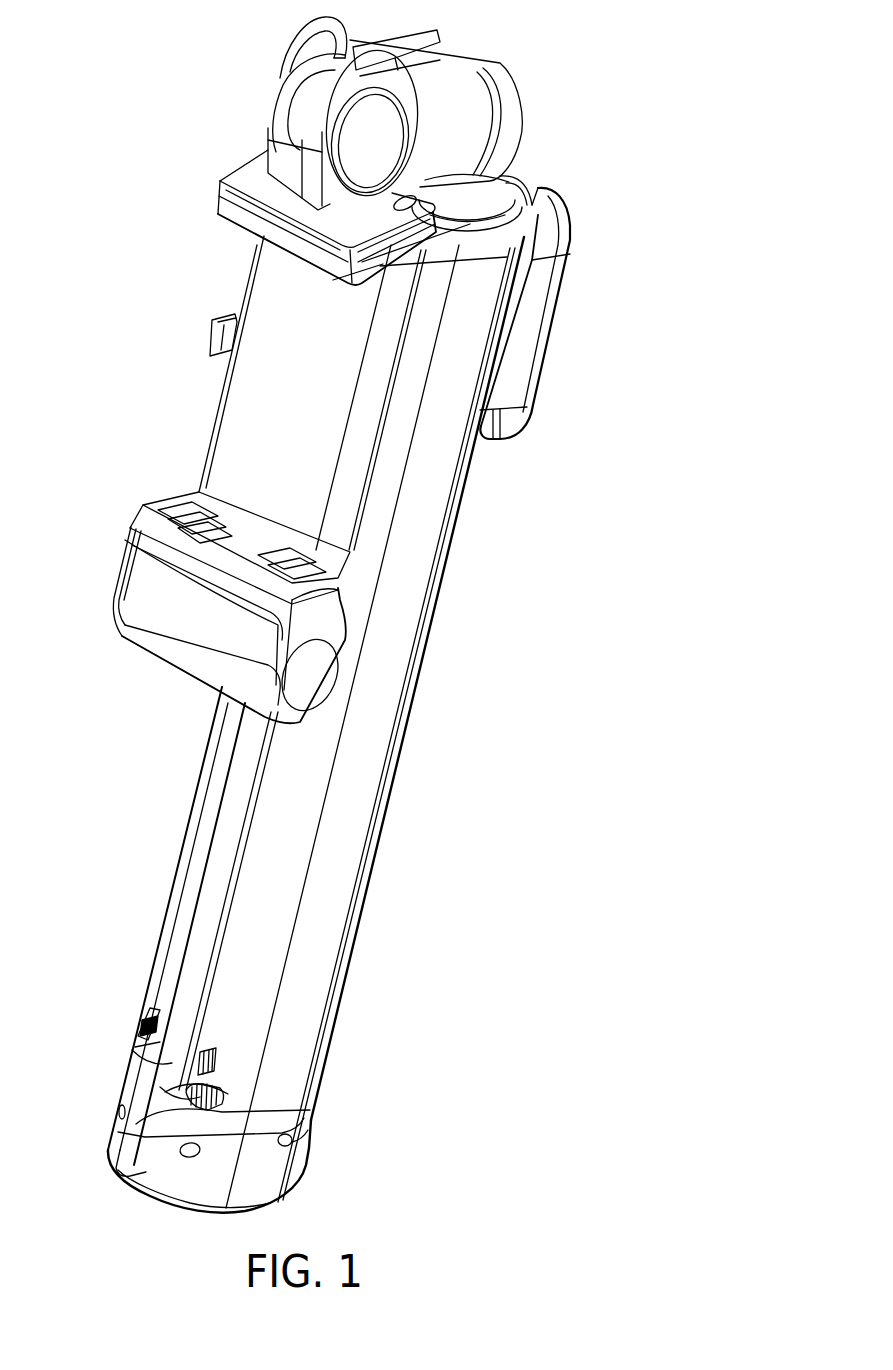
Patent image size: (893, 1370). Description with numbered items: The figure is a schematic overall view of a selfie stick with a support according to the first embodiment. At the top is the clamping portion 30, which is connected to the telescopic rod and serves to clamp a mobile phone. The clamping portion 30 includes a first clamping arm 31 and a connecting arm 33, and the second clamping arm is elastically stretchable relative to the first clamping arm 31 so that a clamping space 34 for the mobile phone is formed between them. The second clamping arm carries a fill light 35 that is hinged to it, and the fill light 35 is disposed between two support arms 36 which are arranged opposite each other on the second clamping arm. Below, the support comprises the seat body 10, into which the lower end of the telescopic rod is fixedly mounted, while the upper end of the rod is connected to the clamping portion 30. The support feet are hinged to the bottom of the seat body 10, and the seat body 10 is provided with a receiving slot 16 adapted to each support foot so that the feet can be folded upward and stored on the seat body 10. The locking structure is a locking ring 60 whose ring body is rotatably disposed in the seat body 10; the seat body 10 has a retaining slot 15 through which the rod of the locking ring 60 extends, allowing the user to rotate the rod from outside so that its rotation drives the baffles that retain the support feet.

The seat body 10 is at (363, 762).
The retaining slot 15 is at (152, 1020).
The receiving slot 16 is at (213, 900).
The clamping portion 30 is at (156, 329).
The first clamping arm 31 is at (253, 210).
The connecting arm 33 is at (453, 122).
The clamping space 34 is at (247, 443).
The fill light 35 is at (180, 652).
The support arms 36 is at (148, 622).
The locking ring 60 is at (226, 1070).